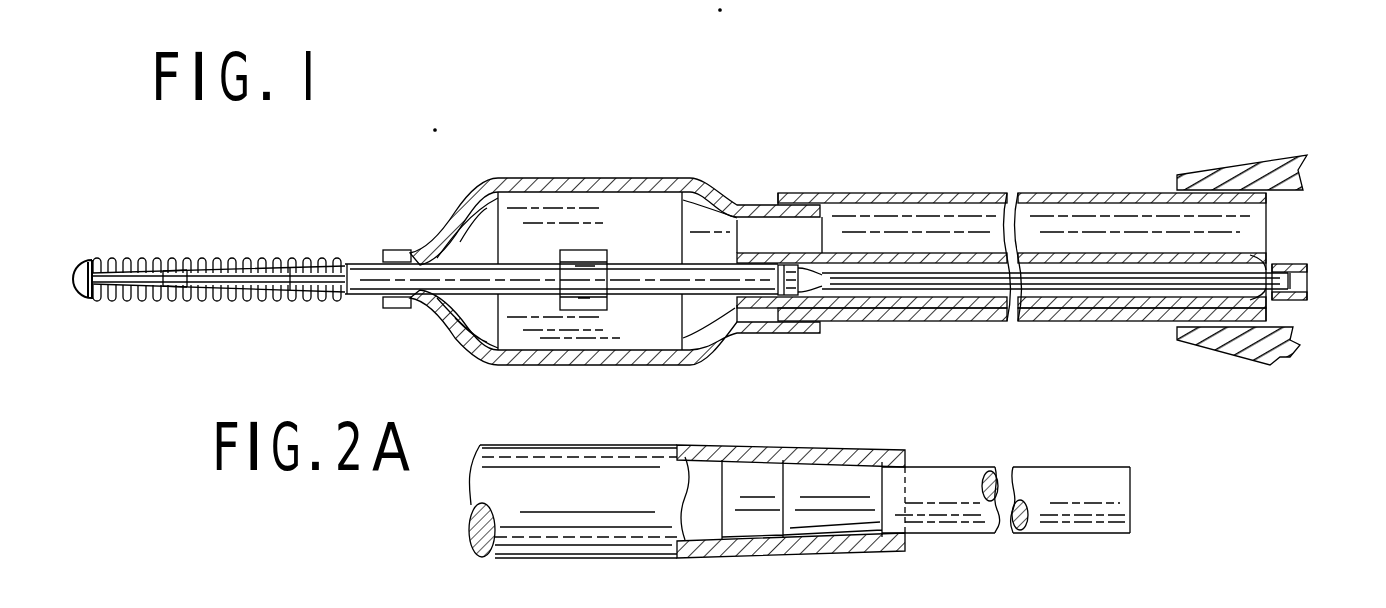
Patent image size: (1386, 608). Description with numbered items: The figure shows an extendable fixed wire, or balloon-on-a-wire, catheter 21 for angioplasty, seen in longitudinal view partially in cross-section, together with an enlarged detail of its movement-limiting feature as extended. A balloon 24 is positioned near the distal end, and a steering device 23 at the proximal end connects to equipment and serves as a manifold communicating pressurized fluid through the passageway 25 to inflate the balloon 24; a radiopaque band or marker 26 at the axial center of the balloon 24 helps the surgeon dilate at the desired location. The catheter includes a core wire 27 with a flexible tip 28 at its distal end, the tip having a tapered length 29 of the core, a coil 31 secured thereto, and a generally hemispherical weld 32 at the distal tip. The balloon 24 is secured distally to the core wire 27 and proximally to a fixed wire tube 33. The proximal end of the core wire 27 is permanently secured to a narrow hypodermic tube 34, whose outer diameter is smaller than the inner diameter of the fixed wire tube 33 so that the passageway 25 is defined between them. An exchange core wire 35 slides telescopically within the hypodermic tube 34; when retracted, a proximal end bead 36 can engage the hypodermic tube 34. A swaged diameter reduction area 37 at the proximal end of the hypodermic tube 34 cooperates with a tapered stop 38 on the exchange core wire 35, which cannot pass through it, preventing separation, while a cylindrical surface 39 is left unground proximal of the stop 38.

In FIG. 1, the balloon-on-a-wire catheter 21 is at (1142, 108).
In FIG. 1, the steering device 23 is at (1270, 343).
In FIG. 1, the balloon 24 is at (646, 178).
In FIG. 1, the passageway 25 is at (1245, 230).
In FIG. 1, the radiopaque band or marker 26 is at (578, 265).
In FIG. 1, the core wire 27 is at (428, 277).
In FIG. 1, the flexible tip 28 is at (252, 210).
In FIG. 1, the tapered length 29 is at (290, 302).
In FIG. 1, the coil 31 is at (160, 262).
In FIG. 1, the hemispherical weld 32 is at (80, 296).
In FIG. 1, the fixed wire tube 33 is at (918, 198).
In FIG. 1, the hypodermic tube 34 is at (915, 303).
In FIG. 2A, the hypodermic tube 34 is at (597, 468).
In FIG. 1, the exchange core wire 35 is at (1062, 283).
In FIG. 2A, the exchange core wire 35 is at (960, 480).
In FIG. 1, the proximal end bead 36 is at (1290, 303).
In FIG. 1, the diameter reduction area 37 is at (1266, 254).
In FIG. 2A, the diameter reduction area 37 is at (862, 455).
In FIG. 1, the stop 38 is at (812, 272).
In FIG. 2A, the stop 38 is at (838, 500).
In FIG. 2A, the cylindrical surface 39 is at (762, 503).